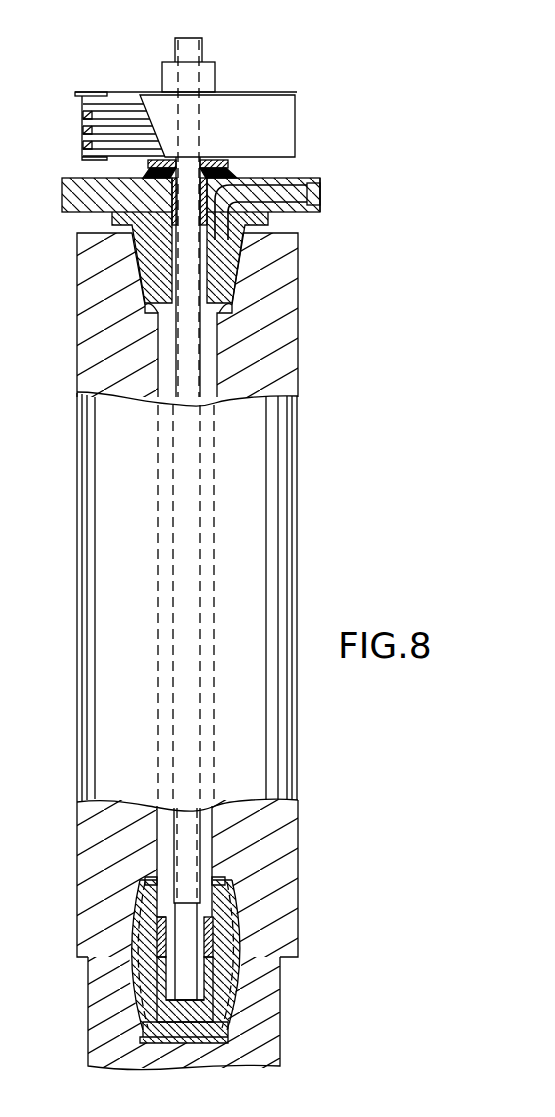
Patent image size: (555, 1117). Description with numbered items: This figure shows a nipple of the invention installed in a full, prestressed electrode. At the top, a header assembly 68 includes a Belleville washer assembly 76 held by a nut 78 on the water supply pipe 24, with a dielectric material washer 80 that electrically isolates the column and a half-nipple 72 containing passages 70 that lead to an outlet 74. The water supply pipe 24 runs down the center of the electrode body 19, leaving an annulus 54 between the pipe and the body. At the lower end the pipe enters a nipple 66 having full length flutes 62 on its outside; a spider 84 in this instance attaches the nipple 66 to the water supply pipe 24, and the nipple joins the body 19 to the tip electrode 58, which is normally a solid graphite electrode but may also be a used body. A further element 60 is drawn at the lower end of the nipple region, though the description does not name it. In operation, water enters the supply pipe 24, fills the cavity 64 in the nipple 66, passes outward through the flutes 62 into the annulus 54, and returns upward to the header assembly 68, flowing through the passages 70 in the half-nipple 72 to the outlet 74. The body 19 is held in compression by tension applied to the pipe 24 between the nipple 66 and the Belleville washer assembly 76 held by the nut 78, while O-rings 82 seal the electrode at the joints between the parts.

The electrode body 19 is at (270, 608).
The water supply pipe 24 is at (193, 40).
The annulus 54 is at (208, 845).
The tip electrode 58 is at (88, 1007).
The cup member 60 is at (222, 985).
The full length flutes 62 is at (240, 940).
The cavity 64 is at (190, 1008).
The nipple 66 is at (233, 963).
The header assembly 68 is at (340, 80).
The passages 70 is at (237, 278).
The half-nipple 72 is at (115, 222).
The outlet 74 is at (322, 194).
The Belleville washer assembly 76 is at (67, 82).
The nut 78 is at (216, 80).
The dielectric material washer 80 is at (235, 166).
The O-rings 82 is at (75, 185).
The spider 84 is at (163, 933).